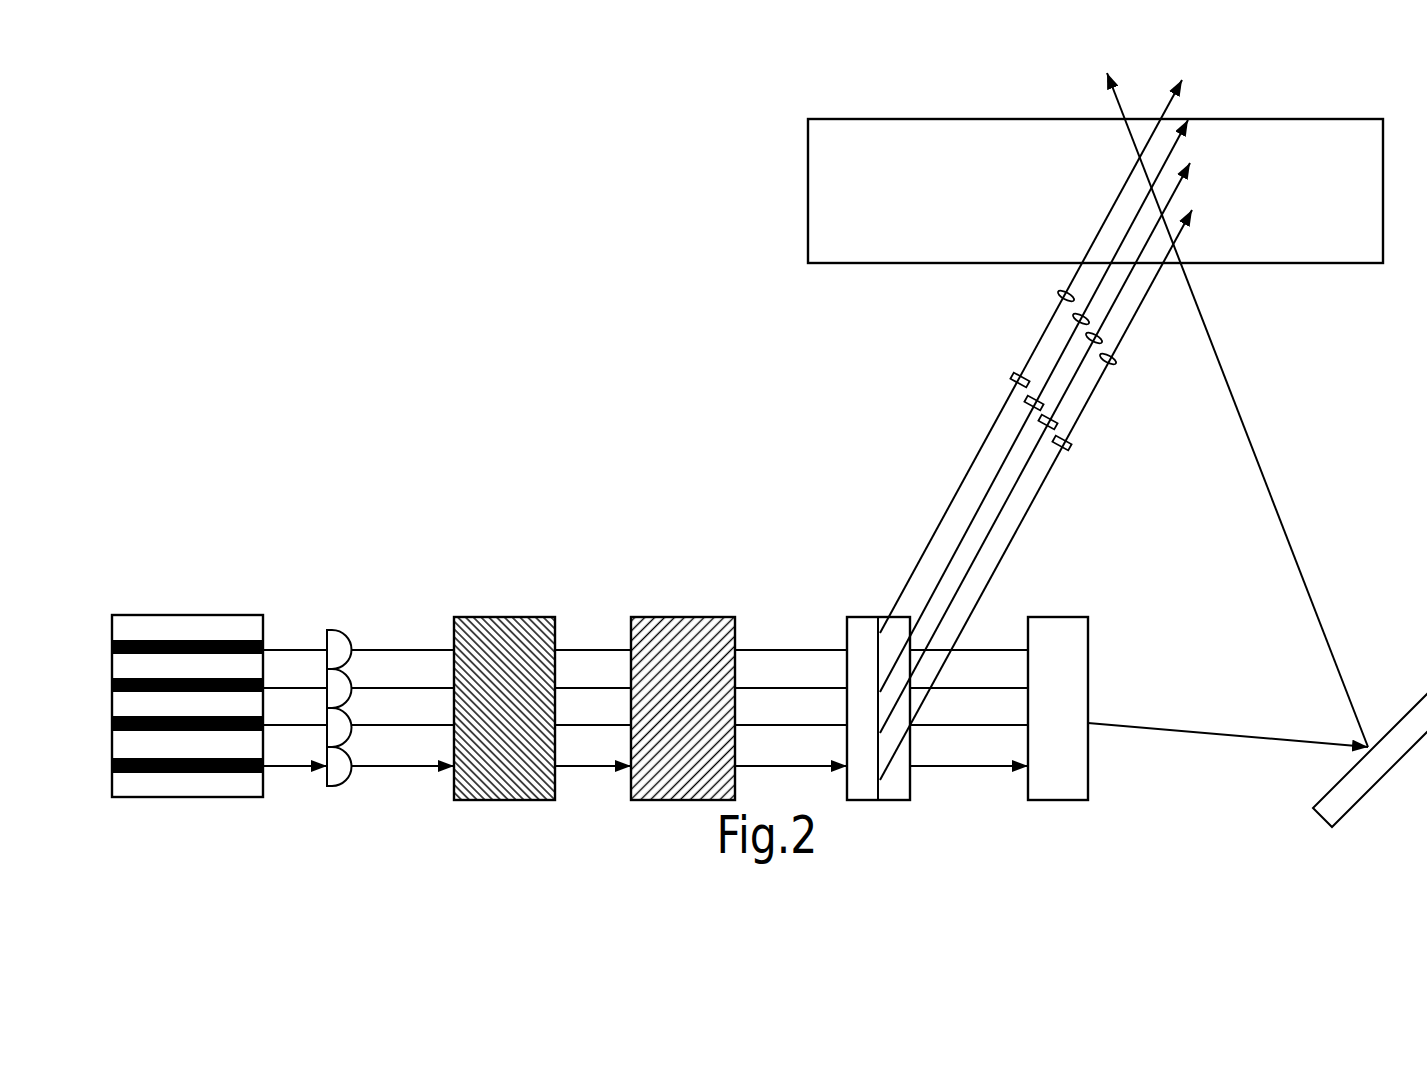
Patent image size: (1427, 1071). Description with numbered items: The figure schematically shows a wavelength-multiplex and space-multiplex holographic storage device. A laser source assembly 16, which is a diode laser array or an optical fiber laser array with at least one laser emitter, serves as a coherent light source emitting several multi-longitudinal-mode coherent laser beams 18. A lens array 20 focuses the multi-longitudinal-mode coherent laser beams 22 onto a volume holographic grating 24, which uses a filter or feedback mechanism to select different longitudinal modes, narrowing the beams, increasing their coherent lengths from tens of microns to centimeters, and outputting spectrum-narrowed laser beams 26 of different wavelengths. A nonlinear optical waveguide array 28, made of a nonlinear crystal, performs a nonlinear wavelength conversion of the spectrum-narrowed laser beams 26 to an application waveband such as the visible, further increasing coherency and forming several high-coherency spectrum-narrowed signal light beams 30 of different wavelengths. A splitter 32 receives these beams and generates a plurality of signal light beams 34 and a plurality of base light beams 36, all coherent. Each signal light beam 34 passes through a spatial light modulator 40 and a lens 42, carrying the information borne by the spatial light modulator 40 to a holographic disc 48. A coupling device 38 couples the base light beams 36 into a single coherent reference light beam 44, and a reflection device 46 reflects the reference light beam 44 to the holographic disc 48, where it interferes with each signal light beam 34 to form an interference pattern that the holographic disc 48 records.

The laser source assembly 16 is at (190, 615).
The multi-longitudinal-mode coherent laser beams 18 is at (291, 648).
The lens array 20 is at (331, 640).
The multi-longitudinal-mode coherent laser beams 22 is at (397, 648).
The volume holographic grating 24 is at (481, 617).
The spectrum-narrowed laser beams 26 is at (589, 650).
The nonlinear optical waveguide array 28 is at (683, 617).
The high-coherency spectrum-narrowed signal light beams 30 is at (793, 652).
The splitter 32 is at (877, 617).
The signal light beams 34 is at (964, 480).
The base light beams 36 is at (986, 656).
The coupling device 38 is at (1088, 617).
The spatial light modulator 40 is at (1019, 403).
The lens 42 is at (1063, 316).
The reference light beam 44 is at (1325, 652).
The reflection device 46 is at (1405, 712).
The holographic disc 48 is at (806, 173).